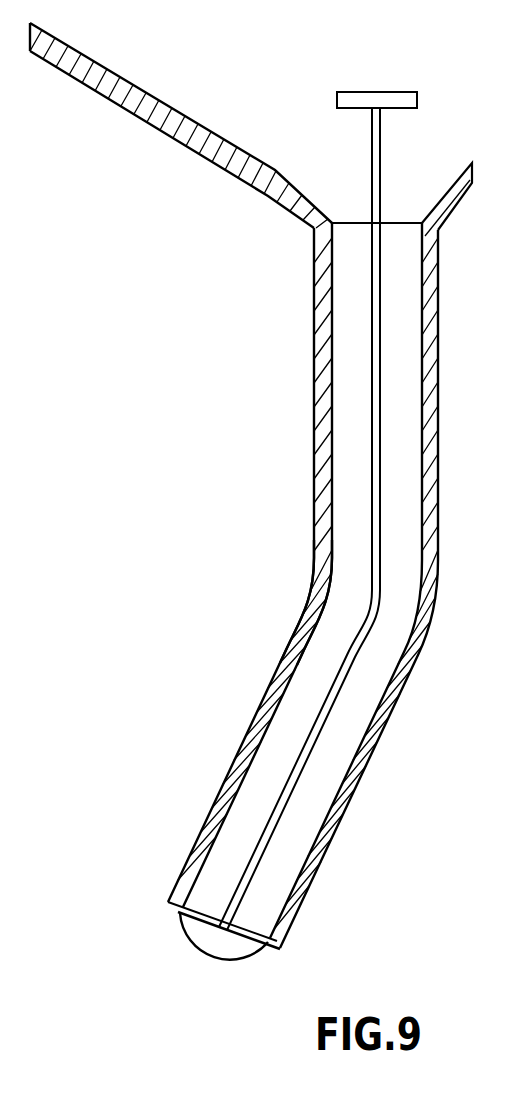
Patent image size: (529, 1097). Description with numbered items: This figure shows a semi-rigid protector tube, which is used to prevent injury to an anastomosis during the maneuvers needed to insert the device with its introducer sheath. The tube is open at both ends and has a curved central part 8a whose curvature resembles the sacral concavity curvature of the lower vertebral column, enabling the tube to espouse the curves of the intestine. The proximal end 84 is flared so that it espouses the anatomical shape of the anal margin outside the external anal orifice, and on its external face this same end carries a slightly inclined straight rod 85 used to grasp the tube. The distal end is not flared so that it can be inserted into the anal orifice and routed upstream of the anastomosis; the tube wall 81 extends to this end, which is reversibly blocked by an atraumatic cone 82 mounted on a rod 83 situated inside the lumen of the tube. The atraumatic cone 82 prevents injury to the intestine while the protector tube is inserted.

The straight rod 85 is at (168, 129).
The proximal end 84 is at (463, 200).
The rod 83 is at (380, 382).
The tube body 81 is at (387, 707).
The curved central part 8a is at (309, 583).
The atraumatic cone 82 is at (194, 937).